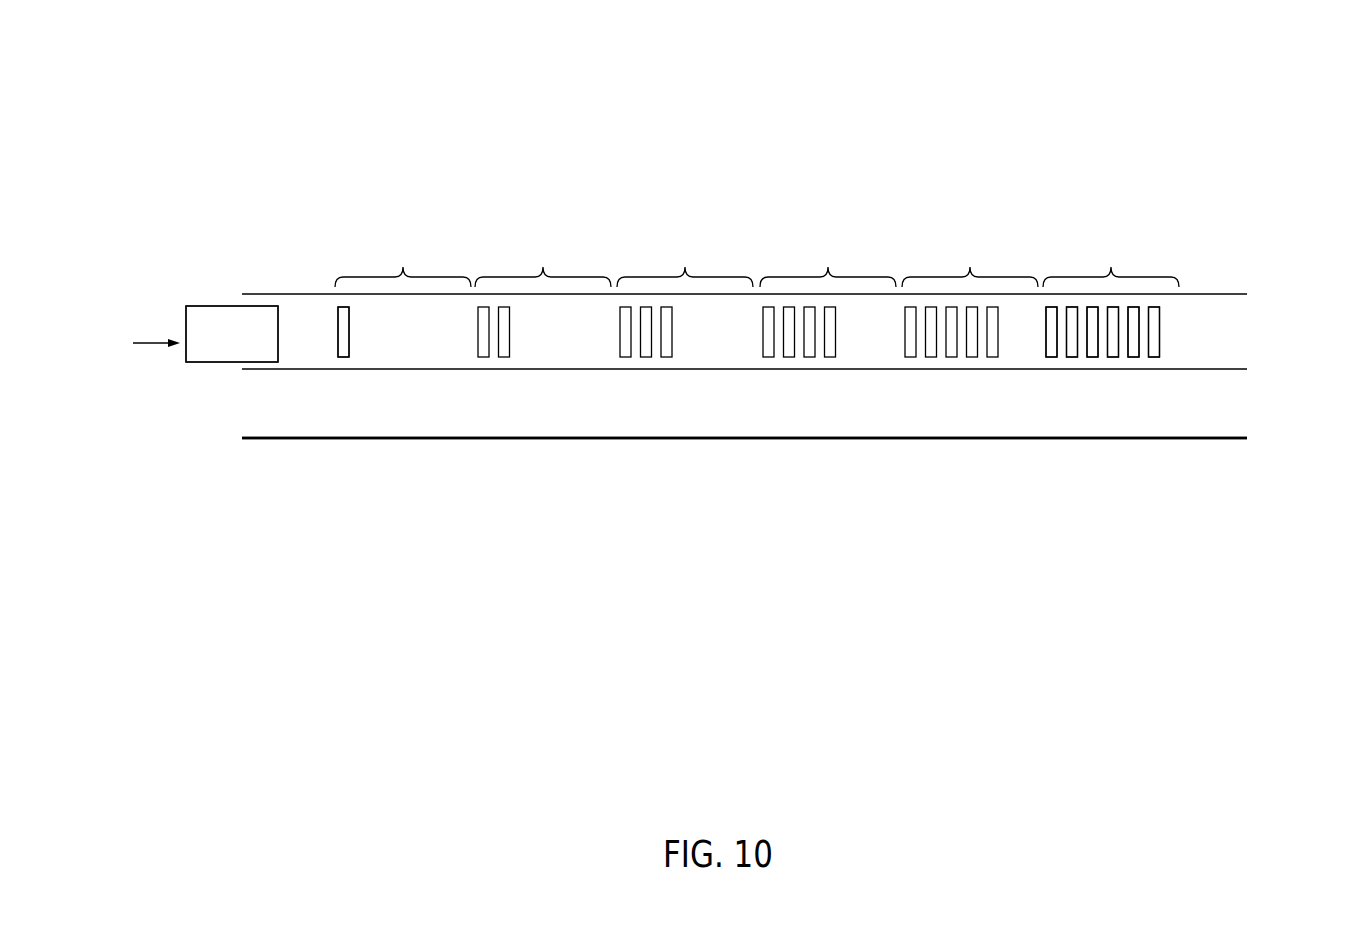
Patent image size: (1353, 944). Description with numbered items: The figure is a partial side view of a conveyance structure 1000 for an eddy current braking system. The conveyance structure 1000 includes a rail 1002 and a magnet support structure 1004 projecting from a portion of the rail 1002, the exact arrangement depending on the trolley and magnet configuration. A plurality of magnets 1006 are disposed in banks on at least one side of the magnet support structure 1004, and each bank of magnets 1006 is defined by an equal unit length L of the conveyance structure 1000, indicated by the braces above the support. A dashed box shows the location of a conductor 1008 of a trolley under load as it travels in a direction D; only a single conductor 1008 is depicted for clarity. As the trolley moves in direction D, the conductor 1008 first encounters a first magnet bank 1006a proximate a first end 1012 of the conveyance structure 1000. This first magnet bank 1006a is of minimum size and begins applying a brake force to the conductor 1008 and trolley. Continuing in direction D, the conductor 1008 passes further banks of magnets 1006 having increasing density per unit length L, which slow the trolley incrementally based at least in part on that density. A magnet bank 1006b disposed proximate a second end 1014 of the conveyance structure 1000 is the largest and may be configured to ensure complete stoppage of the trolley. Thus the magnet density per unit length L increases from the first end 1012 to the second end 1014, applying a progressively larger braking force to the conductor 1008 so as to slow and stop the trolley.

The conveyance structure 1000 is at (1096, 90).
The rail 1002 is at (1228, 400).
The magnet support structure 1004 is at (1245, 330).
The magnets 1006 is at (912, 322).
The first magnet bank 1006a is at (362, 247).
The magnet bank 1006b is at (1153, 257).
The conductor 1008 is at (227, 340).
The first end 1012 is at (220, 286).
The second end 1014 is at (1209, 451).
The direction D is at (156, 331).
The unit length L is at (757, 259).